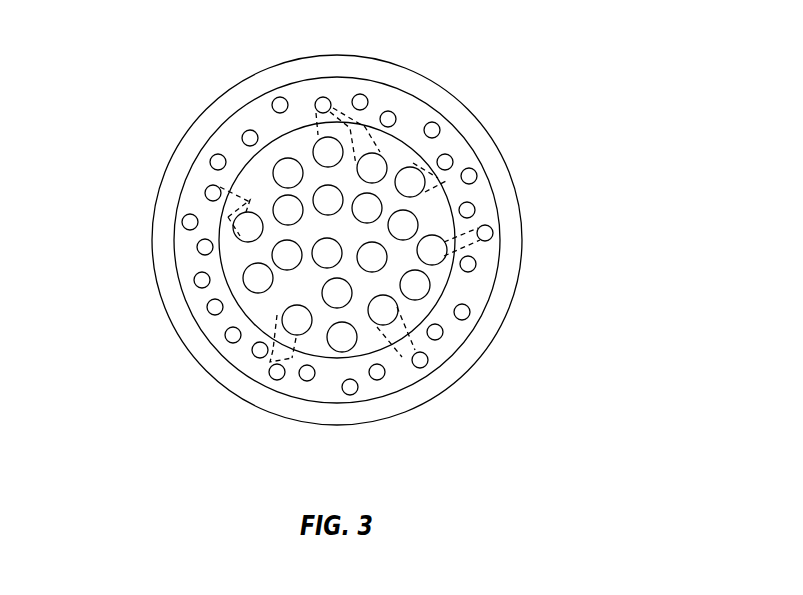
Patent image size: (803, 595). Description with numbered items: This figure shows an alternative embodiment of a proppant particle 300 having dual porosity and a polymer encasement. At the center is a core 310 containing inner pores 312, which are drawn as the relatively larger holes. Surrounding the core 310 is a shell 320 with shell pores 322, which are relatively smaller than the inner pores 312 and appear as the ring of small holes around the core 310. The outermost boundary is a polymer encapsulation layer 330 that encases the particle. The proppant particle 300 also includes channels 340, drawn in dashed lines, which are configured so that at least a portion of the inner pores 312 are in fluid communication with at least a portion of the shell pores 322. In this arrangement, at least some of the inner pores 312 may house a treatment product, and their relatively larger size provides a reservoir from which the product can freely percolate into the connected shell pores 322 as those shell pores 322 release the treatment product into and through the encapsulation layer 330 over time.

The proppant particle 300 is at (198, 119).
The core 310 is at (432, 285).
The inner pores 312 is at (403, 225).
The shell 320 is at (213, 327).
The shell pores 322 is at (188, 222).
The polymer encapsulation layer 330 is at (443, 105).
The channels 340 is at (472, 250).